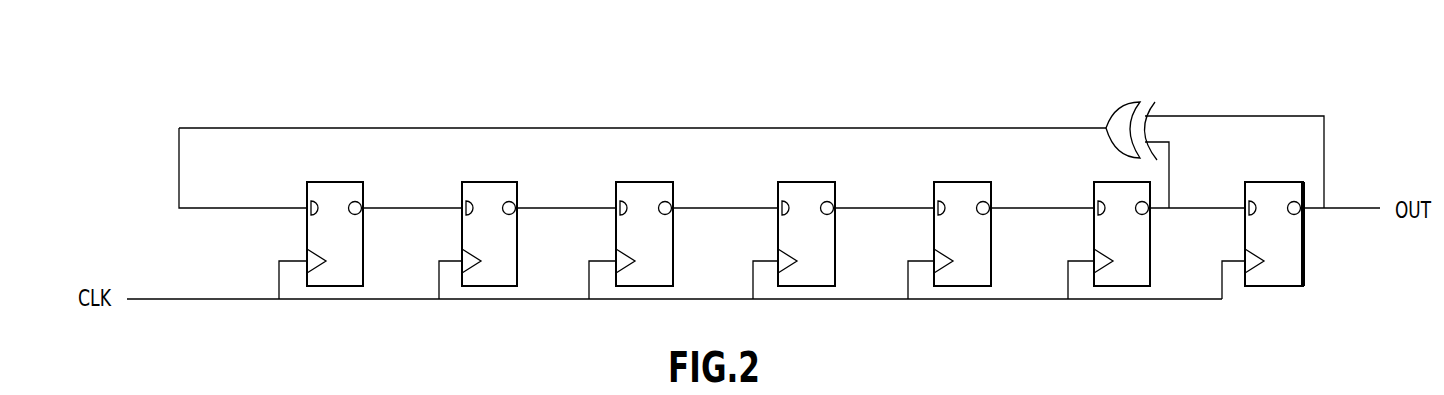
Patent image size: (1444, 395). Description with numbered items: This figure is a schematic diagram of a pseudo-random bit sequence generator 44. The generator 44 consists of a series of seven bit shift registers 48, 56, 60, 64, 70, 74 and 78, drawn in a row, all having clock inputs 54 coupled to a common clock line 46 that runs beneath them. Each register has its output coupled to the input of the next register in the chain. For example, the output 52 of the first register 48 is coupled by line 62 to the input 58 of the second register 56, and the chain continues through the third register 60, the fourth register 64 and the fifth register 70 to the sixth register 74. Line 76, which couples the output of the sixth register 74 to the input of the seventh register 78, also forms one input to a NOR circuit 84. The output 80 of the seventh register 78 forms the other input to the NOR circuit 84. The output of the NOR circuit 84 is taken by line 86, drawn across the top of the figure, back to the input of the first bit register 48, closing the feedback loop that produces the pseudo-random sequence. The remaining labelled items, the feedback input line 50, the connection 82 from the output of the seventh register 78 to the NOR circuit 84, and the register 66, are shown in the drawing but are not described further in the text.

The pseudo-random bit sequence generator 44 is at (741, 102).
The clock line 46 is at (153, 300).
The first bit register 48 is at (309, 189).
The feedback input line 50 is at (197, 208).
The output 52 is at (362, 208).
The clock inputs 54 is at (279, 283).
The register 56 is at (466, 189).
The input 58 is at (462, 212).
The bit shift register 60 is at (659, 182).
The line 62 is at (432, 208).
The bit shift register 64 is at (825, 182).
The sixth flip-flop 66 is at (1132, 264).
The bit shift register 70 is at (971, 182).
The sixth register 74 is at (1150, 268).
The line 76 is at (1160, 210).
The seventh register 78 is at (1262, 182).
The output 80 is at (1350, 210).
The feedback connection to exclusive-OR gate 82 is at (1212, 117).
The NOR circuit 84 is at (1108, 116).
The line 86 is at (253, 128).